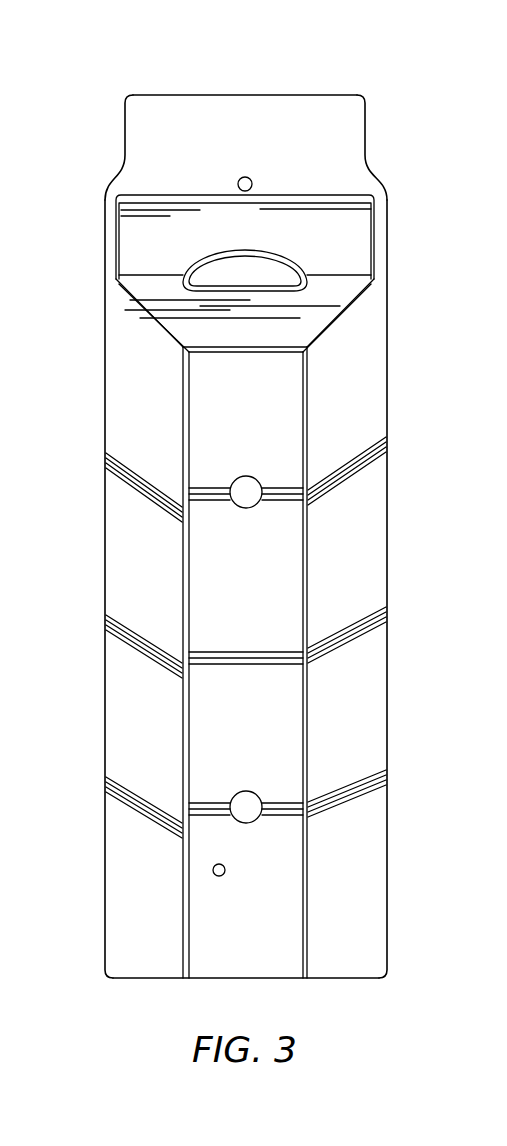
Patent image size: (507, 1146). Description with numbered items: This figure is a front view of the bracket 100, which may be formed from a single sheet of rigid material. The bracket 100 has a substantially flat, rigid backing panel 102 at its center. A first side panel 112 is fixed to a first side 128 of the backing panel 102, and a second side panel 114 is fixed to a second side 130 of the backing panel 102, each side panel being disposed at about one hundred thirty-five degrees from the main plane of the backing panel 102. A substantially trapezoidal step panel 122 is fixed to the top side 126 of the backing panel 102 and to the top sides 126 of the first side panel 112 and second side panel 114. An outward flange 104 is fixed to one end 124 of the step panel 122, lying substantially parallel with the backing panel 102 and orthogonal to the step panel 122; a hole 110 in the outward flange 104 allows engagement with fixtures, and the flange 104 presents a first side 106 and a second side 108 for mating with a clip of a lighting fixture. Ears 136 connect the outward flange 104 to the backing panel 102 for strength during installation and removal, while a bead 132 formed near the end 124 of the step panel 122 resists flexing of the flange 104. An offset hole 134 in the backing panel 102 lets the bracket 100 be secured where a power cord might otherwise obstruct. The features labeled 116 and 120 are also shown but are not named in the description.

The bracket 100 is at (173, 63).
The backing panel 102 is at (210, 412).
The outward flange 104 is at (366, 140).
The first side 106 is at (283, 127).
The second side 108 is at (233, 95).
The hole 110 is at (242, 177).
The first side panel 112 is at (360, 763).
The second side panel 114 is at (147, 762).
The bottom edge 116 is at (227, 963).
The aperture 120 is at (296, 493).
The step panel 122 is at (193, 333).
The end of step panel 124 is at (118, 275).
The top side 126 is at (338, 331).
The first side of backing panel 128 is at (320, 567).
The second side of backing panel 130 is at (182, 556).
The bead 132 is at (253, 249).
The offset hole 134 is at (221, 877).
The ears 136 is at (113, 195).